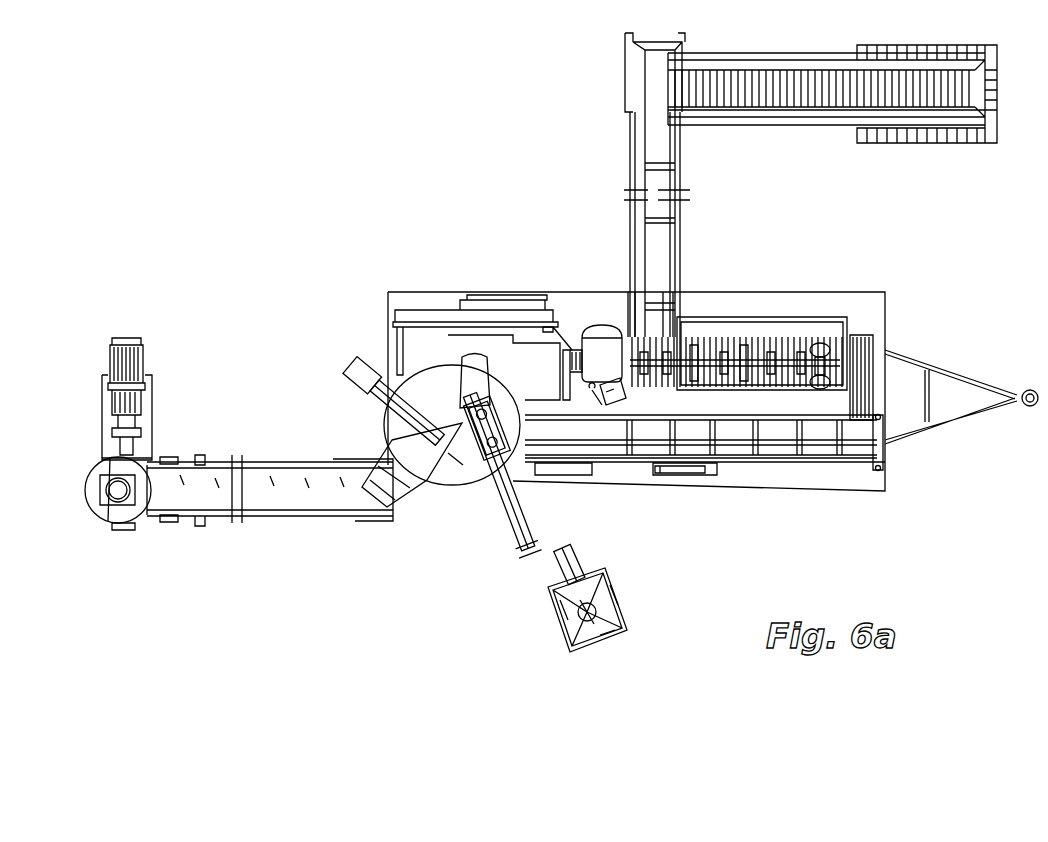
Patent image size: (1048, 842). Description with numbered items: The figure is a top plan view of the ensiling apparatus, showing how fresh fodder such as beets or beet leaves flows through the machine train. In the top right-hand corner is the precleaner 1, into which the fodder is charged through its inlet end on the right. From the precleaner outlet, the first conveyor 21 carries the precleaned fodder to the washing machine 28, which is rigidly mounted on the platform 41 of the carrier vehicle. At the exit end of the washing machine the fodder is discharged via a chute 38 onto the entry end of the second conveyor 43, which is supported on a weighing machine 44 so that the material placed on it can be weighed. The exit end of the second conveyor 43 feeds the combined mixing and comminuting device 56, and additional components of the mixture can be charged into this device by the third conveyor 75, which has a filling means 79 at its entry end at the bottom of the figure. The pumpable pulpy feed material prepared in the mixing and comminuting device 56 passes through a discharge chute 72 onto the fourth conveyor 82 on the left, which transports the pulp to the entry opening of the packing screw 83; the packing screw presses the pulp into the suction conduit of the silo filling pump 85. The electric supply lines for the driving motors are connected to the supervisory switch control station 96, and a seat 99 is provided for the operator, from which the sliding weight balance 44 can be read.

The precleaner 1 is at (793, 130).
The first conveyor 21 is at (604, 162).
The washing machine 28 is at (770, 320).
The chute 38 is at (880, 352).
The platform 41 is at (866, 492).
The second conveyor 43 is at (818, 505).
The weighing machine 44 is at (694, 478).
The combined mixing and comminuting device 56 is at (378, 413).
The discharge chute 72 is at (412, 497).
The third conveyor 75 is at (532, 522).
The filling means 79 is at (557, 620).
The fourth conveyor 82 is at (290, 520).
The packing screw 83 is at (92, 514).
The silo filling pump 85 is at (152, 430).
The supervisory switch control station 96 is at (453, 290).
The seat 99 is at (601, 326).